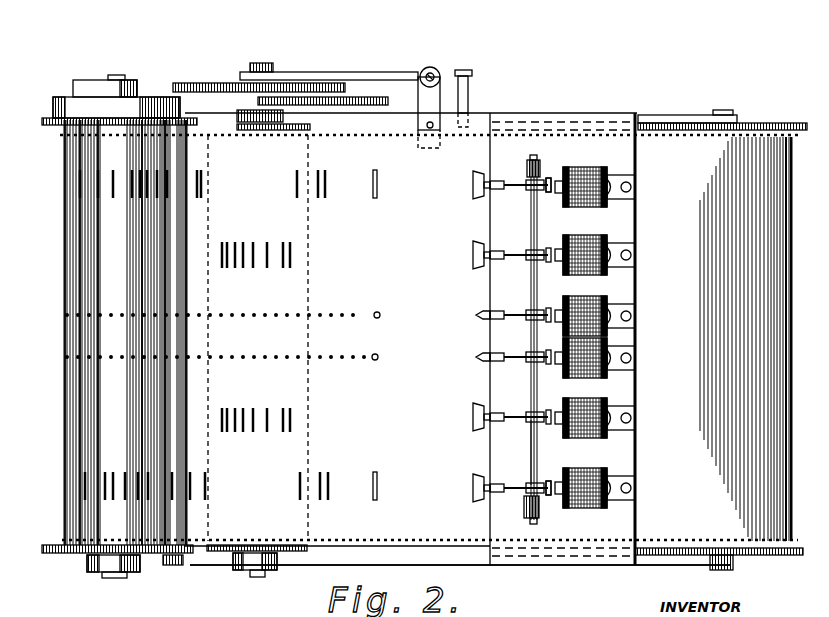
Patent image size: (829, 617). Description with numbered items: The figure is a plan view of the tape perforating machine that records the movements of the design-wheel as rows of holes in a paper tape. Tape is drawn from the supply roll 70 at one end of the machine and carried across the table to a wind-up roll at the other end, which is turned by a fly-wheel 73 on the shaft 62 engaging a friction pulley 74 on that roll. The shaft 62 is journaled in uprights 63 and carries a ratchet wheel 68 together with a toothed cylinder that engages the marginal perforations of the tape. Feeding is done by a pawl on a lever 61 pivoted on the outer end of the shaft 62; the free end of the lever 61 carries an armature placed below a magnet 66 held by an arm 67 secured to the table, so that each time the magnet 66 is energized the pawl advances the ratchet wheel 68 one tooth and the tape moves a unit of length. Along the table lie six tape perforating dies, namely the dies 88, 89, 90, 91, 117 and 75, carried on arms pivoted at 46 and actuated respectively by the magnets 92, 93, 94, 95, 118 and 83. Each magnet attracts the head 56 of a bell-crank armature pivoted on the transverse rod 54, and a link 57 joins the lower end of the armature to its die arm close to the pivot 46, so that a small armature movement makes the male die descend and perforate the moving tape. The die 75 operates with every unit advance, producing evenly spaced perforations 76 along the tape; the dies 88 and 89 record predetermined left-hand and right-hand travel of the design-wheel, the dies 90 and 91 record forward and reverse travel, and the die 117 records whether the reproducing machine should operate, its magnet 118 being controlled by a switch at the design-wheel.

The friction pulley 74 is at (150, 102).
The fly-wheel 73 is at (195, 100).
The ratchet wheel 68 is at (217, 85).
The shaft 62 is at (265, 65).
The lever 61 is at (327, 73).
The magnet 66 is at (442, 70).
The arm 67 is at (435, 102).
The supply roll 70 is at (757, 157).
The magnet 95 is at (583, 187).
The magnet 94 is at (583, 257).
The magnet 118 is at (585, 318).
The magnet 83 is at (585, 355).
The magnet 93 is at (585, 420).
The magnet 92 is at (585, 490).
The armature head 56 is at (520, 277).
The pin or rod 54 is at (532, 240).
The link 57 is at (510, 438).
The die 91 is at (473, 185).
The die 90 is at (473, 252).
The die 117 is at (476, 315).
The die 75 is at (476, 357).
The die 89 is at (473, 417).
The die 88 is at (470, 490).
The perforations 76 is at (343, 353).
The uprights 63 is at (257, 555).
The pivot 46 is at (353, 518).